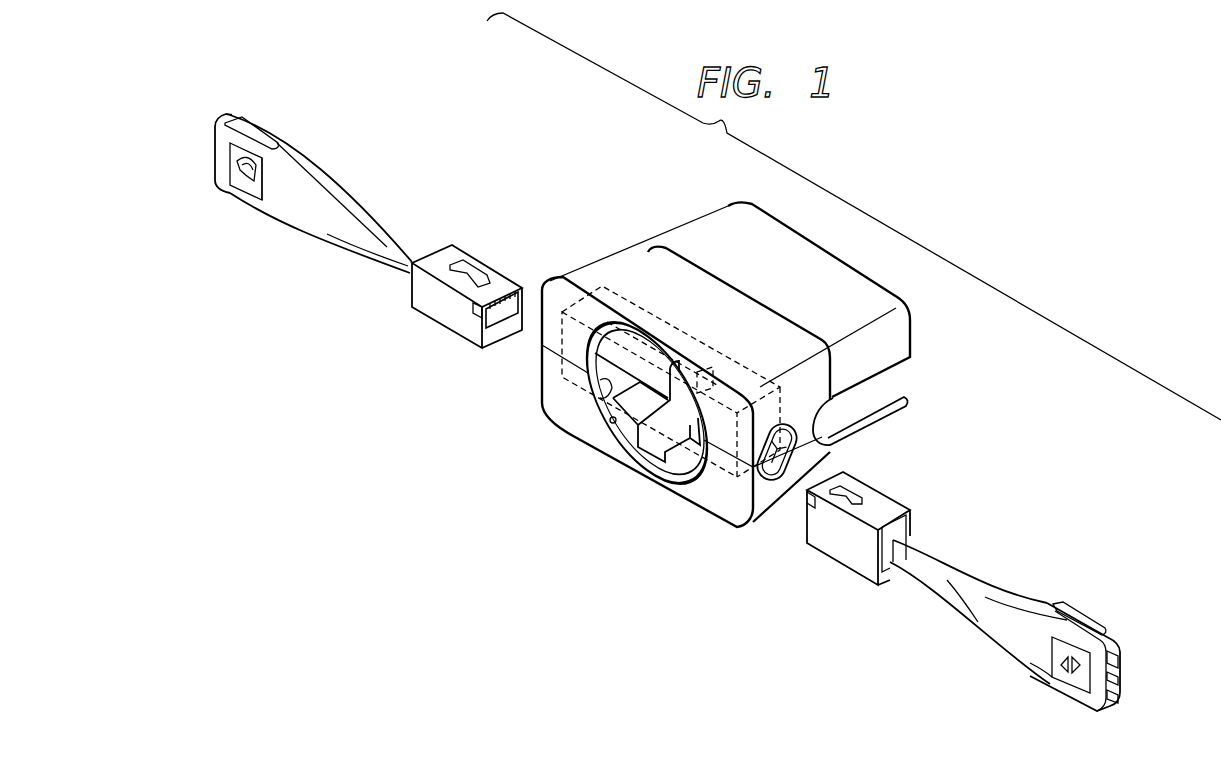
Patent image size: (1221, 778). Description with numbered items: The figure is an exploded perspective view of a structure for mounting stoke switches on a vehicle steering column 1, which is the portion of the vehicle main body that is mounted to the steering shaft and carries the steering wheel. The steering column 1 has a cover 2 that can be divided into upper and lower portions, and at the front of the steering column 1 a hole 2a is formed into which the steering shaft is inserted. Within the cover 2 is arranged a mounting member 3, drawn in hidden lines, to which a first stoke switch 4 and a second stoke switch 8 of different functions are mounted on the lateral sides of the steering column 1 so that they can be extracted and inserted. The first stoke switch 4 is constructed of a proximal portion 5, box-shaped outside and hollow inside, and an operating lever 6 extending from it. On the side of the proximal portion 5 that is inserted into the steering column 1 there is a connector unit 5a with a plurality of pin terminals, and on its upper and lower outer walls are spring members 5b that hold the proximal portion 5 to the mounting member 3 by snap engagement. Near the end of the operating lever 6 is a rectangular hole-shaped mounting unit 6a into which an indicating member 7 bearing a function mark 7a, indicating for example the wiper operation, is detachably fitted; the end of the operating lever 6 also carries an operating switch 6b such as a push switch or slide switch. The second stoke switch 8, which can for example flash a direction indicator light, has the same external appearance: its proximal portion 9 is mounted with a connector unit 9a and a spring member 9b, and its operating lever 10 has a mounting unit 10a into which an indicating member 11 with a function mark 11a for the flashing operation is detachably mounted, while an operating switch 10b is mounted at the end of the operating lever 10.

The steering column 1 is at (593, 256).
The cover 2 is at (717, 225).
The hole 2a is at (598, 407).
The mounting member 3 is at (627, 296).
The first stoke switch 4 is at (380, 192).
The proximal portion 5 is at (453, 248).
The connector unit 5a is at (507, 318).
The spring member 5b is at (477, 257).
The operating lever 6 is at (313, 168).
The mounting unit 6a is at (262, 188).
The cable head 6b is at (227, 118).
The indicating member 7 is at (233, 188).
The function mark 7a is at (237, 161).
The second stoke switch 8 is at (981, 552).
The proximal portion 9 is at (890, 500).
The connector unit 9a is at (803, 508).
The spring member 9b is at (857, 492).
The operating lever 10 is at (1017, 590).
The mounting unit 10a is at (1053, 655).
The operating switch 10b is at (1120, 655).
The indicating member 11 is at (1077, 697).
The function mark 11a is at (1067, 682).